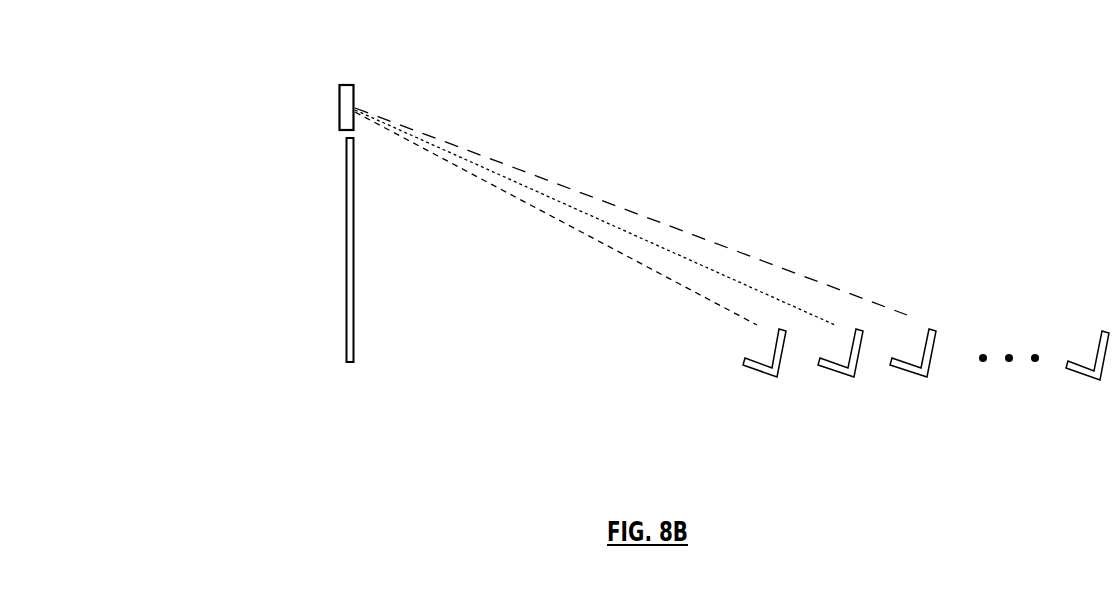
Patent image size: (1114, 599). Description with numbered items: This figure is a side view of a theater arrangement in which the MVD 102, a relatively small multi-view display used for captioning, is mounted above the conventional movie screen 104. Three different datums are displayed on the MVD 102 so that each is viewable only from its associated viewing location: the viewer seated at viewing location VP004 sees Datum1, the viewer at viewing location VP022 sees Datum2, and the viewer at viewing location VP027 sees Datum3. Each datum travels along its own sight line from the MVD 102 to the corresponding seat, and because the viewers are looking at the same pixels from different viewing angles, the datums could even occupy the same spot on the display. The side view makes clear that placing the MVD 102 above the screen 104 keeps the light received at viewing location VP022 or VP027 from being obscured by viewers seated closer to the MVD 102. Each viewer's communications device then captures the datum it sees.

The MVD 102 is at (345, 84).
The movie screen 104 is at (346, 228).
The datum 1 Datum1 is at (556, 214).
The datum 2 Datum2 is at (628, 231).
The datum 3 Datum3 is at (760, 259).
The viewing location VL-004 VP004 is at (758, 368).
The viewing location VL-022 VP022 is at (838, 368).
The viewing location VL-027 VP027 is at (913, 370).